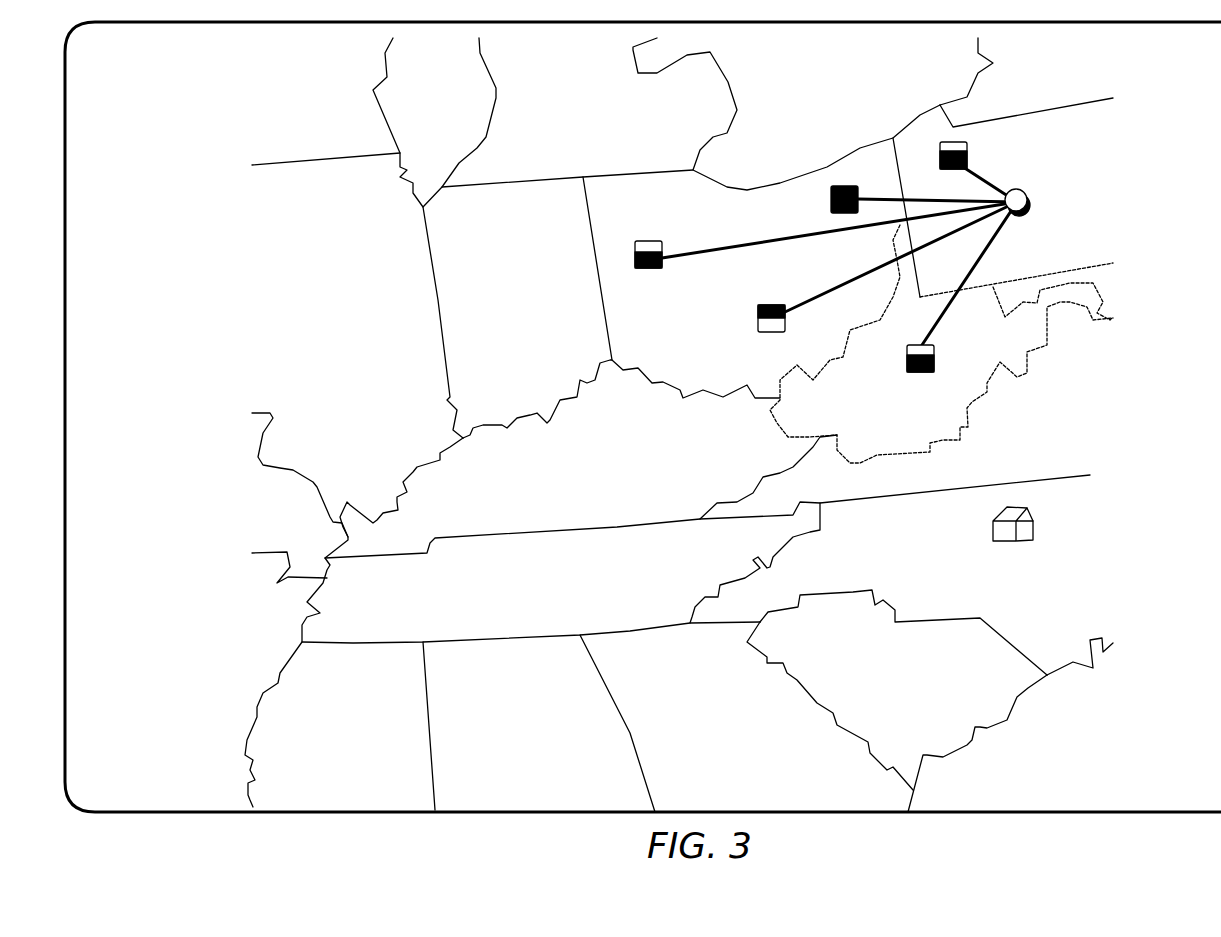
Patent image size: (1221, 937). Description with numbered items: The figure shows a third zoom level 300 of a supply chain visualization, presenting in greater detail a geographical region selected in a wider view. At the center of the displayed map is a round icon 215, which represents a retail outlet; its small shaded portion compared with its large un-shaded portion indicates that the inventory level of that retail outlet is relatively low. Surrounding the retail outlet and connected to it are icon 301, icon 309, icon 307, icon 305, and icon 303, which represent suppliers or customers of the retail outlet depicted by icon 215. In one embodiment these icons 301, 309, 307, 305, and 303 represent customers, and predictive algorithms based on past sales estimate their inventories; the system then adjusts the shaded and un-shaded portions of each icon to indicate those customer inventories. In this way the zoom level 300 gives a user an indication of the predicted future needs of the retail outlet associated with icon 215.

The third zoom level 300 is at (1141, 151).
The icon 215 is at (1030, 200).
The icon 301 is at (973, 152).
The icon 303 is at (914, 375).
The icon 305 is at (755, 322).
The icon 307 is at (648, 270).
The icon 309 is at (828, 200).